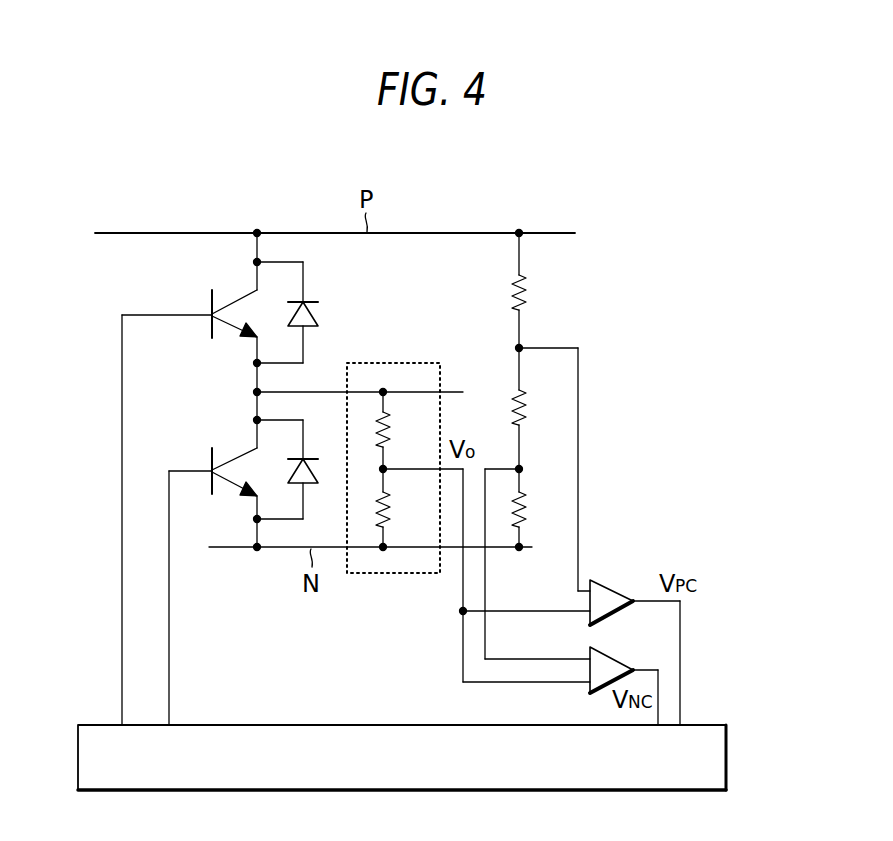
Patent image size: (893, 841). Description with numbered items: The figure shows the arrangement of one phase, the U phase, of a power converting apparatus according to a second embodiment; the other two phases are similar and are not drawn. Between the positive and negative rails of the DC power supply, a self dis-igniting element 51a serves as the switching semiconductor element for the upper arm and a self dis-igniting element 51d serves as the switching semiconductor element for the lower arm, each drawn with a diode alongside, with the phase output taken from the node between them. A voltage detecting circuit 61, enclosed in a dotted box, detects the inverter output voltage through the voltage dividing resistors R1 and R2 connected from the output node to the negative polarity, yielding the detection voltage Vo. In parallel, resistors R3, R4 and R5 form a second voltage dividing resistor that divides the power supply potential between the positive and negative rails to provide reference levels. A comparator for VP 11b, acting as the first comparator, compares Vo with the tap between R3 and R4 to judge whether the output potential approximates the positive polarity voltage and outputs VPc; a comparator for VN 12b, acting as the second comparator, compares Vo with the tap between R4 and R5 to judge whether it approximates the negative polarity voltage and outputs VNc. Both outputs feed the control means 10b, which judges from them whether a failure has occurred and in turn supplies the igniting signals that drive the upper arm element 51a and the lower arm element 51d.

The self dis-igniting element for upper arm 51a is at (209, 297).
The self dis-igniting element for lower arm 51d is at (209, 455).
The voltage detecting circuit 61 is at (393, 444).
The voltage dividing resistor R1 is at (400, 430).
The voltage dividing resistor R2 is at (400, 508).
The resistor of second voltage dividing resistor R3 is at (536, 290).
The resistor of second voltage dividing resistor R4 is at (536, 408).
The resistor of second voltage dividing resistor R5 is at (536, 508).
The comparator for VP 11b is at (617, 586).
The comparator for VN 12b is at (631, 663).
The control means 10b is at (728, 757).